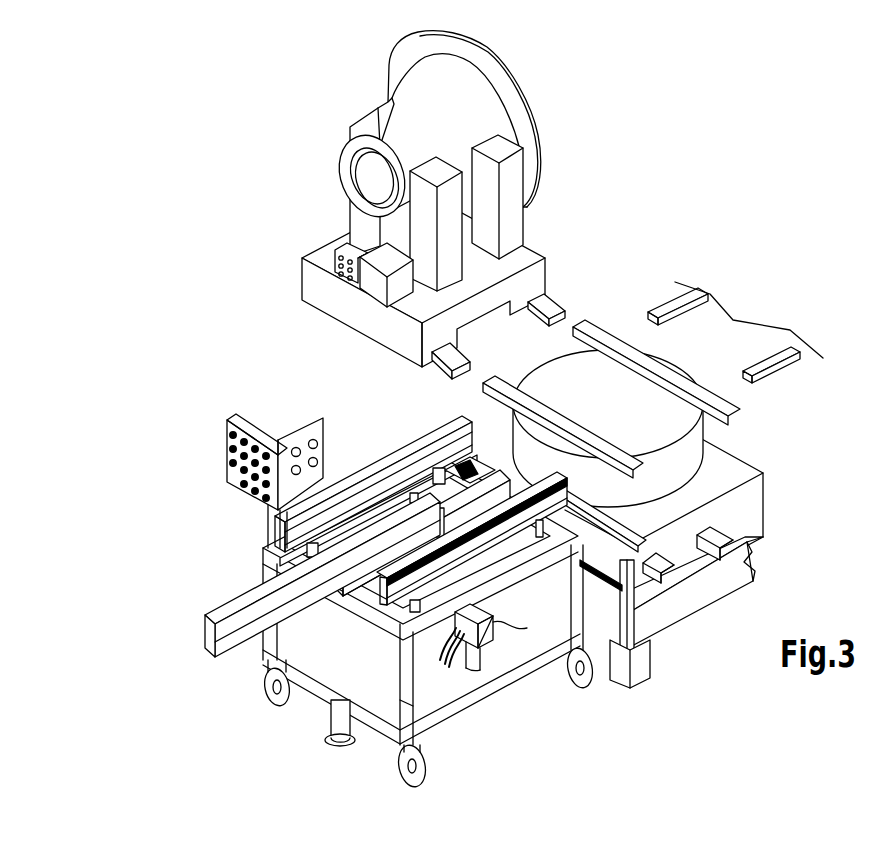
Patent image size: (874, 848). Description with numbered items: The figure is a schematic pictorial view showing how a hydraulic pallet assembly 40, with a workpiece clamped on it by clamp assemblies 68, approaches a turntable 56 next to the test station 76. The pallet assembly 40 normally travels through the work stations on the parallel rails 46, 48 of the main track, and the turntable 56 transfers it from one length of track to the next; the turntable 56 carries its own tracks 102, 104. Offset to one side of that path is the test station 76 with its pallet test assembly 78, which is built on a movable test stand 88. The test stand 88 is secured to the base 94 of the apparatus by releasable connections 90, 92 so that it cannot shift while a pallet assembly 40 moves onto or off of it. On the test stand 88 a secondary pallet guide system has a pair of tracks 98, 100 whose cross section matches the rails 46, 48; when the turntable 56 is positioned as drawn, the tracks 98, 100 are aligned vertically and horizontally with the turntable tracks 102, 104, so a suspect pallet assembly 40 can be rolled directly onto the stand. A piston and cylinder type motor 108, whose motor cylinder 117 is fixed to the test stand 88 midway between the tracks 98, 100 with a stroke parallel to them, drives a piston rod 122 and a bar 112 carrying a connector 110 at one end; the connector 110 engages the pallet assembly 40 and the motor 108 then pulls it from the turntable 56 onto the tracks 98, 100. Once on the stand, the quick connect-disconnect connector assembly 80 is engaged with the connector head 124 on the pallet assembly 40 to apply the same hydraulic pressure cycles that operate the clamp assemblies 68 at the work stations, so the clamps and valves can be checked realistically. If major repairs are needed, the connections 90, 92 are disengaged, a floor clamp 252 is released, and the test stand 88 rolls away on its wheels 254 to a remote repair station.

The hydraulic pallet assembly 40 is at (312, 307).
The clamp assembly 68 is at (363, 120).
The connector head 124 is at (352, 250).
The rail 46 is at (437, 358).
The rail 48 is at (561, 302).
The base 94 is at (733, 482).
The turntable 56 is at (715, 445).
The track 102 is at (567, 424).
The track 104 is at (660, 373).
The pallet test assembly 78 is at (256, 558).
The track 100 is at (390, 468).
The connector 110 is at (462, 462).
The releasable connection 90 is at (484, 464).
The piston and cylinder type motor 108 is at (352, 596).
The motor cylinder 117 is at (362, 578).
The track 98 is at (452, 538).
The bar 112 is at (218, 605).
The piston rod 122 is at (232, 648).
The test station 76 is at (190, 521).
The wheels 254 is at (280, 692).
The floor clamp 252 is at (331, 722).
The test stand 88 is at (413, 697).
The quick connect-disconnect connector assembly 80 is at (490, 646).
The releasable connection 92 is at (603, 540).